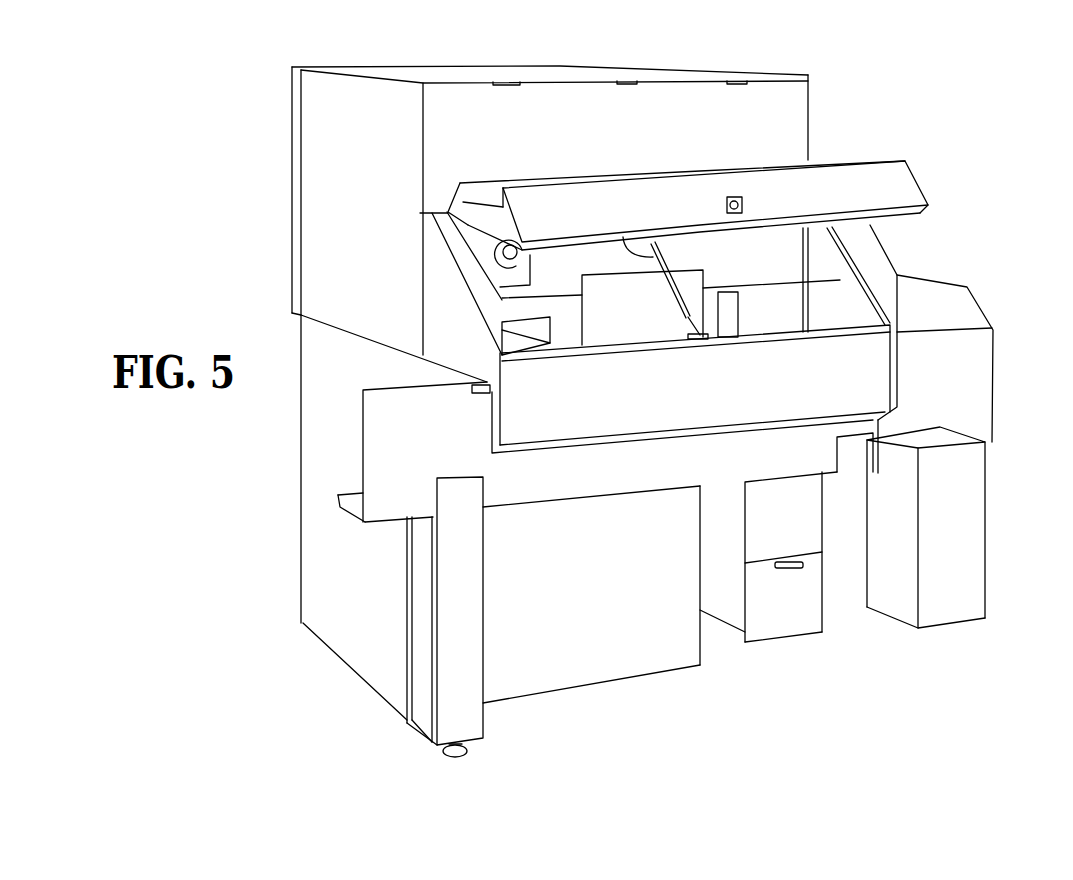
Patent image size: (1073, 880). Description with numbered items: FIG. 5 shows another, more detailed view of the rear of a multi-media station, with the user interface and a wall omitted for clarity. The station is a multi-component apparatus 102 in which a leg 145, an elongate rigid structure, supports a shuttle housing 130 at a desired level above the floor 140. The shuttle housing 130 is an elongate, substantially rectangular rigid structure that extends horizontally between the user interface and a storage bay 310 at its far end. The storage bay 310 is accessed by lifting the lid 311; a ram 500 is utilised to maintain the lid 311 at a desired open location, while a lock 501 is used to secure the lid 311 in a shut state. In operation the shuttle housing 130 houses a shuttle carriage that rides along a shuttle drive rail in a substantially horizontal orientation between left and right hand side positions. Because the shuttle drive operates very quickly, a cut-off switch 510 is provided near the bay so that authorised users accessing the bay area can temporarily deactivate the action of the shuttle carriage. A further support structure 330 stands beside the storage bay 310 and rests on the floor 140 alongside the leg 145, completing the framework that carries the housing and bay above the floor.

The upper cabinet of scanning apparatus 102 is at (655, 118).
The ram 500 is at (627, 238).
The lock 501 is at (742, 203).
The lid 311 is at (908, 186).
The storage bay 310 is at (820, 312).
The cut-off switch 510 is at (503, 256).
The shuttle housing 130 is at (560, 485).
The floor 140 is at (763, 751).
The leg 145 is at (475, 716).
The support column 330 is at (962, 570).